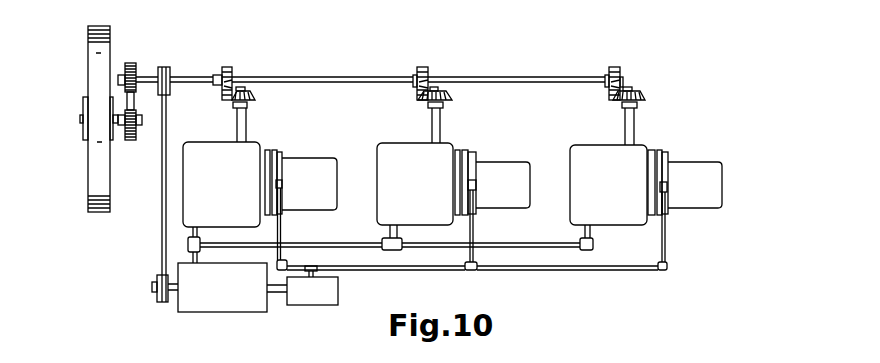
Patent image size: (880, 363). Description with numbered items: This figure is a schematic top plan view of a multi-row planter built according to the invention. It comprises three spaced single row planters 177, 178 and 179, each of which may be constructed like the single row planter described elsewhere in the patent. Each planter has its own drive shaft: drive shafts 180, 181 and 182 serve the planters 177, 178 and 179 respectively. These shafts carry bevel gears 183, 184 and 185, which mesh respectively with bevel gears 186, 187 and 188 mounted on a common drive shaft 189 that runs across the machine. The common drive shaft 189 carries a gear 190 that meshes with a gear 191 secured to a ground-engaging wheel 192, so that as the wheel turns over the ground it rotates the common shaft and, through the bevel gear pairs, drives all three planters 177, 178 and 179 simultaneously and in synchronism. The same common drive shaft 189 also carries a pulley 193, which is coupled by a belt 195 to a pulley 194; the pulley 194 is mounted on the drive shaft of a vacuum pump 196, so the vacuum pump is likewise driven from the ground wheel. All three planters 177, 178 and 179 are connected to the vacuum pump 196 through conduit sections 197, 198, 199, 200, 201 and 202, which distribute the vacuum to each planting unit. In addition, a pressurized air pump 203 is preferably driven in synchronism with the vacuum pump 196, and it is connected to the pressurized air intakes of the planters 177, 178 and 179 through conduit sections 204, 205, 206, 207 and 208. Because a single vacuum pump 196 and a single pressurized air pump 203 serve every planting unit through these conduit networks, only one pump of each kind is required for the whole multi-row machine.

The single row planter 177 is at (284, 152).
The single row planter 178 is at (457, 152).
The single row planter 179 is at (648, 146).
The drive shaft 180 is at (241, 123).
The drive shaft 181 is at (440, 122).
The drive shaft 182 is at (632, 118).
The bevel gear 183 is at (252, 90).
The bevel gear 184 is at (447, 90).
The bevel gear 185 is at (636, 92).
The bevel gear 186 is at (234, 72).
The bevel gear 187 is at (425, 70).
The bevel gear 188 is at (635, 41).
The common drive shaft 189 is at (200, 80).
The gear 190 is at (130, 62).
The gear 191 is at (130, 142).
The ground-engaging wheel 192 is at (92, 64).
The pulley 193 is at (166, 66).
The pulley 194 is at (172, 302).
The belt 195 is at (162, 230).
The vacuum pump 196 is at (250, 300).
The conduit section 197 is at (199, 257).
The conduit section 198 is at (198, 228).
The conduit section 199 is at (328, 248).
The conduit section 200 is at (394, 227).
The conduit section 201 is at (498, 243).
The conduit section 202 is at (590, 227).
The pressurized air pump 203 is at (317, 295).
The conduit section 204 is at (284, 231).
The conduit section 205 is at (385, 272).
The conduit section 206 is at (474, 231).
The conduit section 207 is at (548, 272).
The conduit section 208 is at (666, 239).